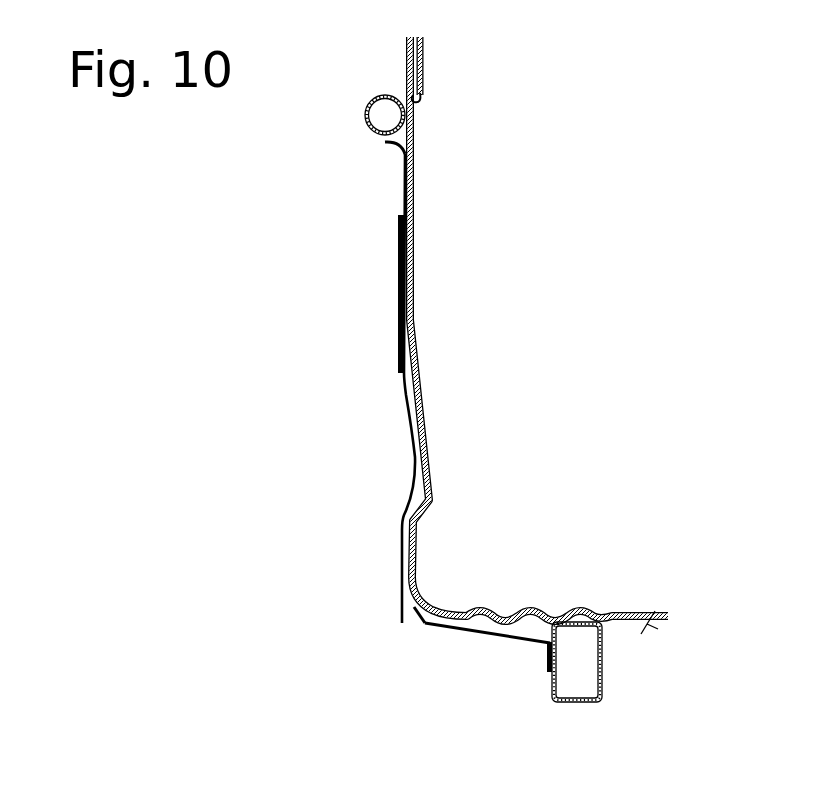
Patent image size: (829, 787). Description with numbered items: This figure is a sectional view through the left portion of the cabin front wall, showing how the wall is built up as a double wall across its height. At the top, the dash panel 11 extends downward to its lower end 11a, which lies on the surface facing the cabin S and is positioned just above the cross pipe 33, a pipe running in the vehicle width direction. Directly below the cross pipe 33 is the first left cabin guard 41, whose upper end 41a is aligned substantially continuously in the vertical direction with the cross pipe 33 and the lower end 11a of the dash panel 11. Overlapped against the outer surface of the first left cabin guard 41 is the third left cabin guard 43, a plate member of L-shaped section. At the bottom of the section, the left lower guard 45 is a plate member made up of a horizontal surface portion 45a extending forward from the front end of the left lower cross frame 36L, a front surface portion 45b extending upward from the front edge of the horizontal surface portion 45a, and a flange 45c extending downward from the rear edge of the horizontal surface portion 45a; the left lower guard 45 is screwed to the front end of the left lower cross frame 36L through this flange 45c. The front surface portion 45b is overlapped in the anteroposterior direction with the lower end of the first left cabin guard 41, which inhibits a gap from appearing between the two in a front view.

The dash panel 11 is at (423, 53).
The lower end of the dash panel 11a is at (426, 104).
The cross pipe 33 is at (365, 124).
The first left cabin guard 41 is at (403, 502).
The upper end of the first left cabin guard 41a is at (387, 145).
The third left cabin guard 43 is at (397, 257).
The left lower guard 45 is at (446, 682).
The horizontal surface portion 45a is at (487, 634).
The front surface portion 45b is at (418, 626).
The flange 45c is at (550, 652).
The left lower cross frame 36L is at (603, 653).
The cabin S is at (564, 471).